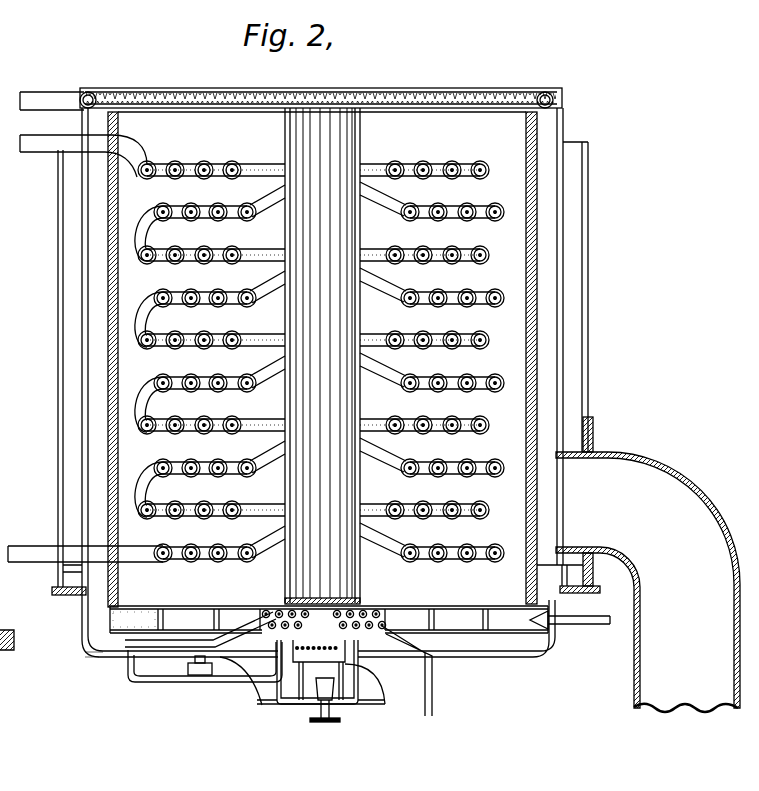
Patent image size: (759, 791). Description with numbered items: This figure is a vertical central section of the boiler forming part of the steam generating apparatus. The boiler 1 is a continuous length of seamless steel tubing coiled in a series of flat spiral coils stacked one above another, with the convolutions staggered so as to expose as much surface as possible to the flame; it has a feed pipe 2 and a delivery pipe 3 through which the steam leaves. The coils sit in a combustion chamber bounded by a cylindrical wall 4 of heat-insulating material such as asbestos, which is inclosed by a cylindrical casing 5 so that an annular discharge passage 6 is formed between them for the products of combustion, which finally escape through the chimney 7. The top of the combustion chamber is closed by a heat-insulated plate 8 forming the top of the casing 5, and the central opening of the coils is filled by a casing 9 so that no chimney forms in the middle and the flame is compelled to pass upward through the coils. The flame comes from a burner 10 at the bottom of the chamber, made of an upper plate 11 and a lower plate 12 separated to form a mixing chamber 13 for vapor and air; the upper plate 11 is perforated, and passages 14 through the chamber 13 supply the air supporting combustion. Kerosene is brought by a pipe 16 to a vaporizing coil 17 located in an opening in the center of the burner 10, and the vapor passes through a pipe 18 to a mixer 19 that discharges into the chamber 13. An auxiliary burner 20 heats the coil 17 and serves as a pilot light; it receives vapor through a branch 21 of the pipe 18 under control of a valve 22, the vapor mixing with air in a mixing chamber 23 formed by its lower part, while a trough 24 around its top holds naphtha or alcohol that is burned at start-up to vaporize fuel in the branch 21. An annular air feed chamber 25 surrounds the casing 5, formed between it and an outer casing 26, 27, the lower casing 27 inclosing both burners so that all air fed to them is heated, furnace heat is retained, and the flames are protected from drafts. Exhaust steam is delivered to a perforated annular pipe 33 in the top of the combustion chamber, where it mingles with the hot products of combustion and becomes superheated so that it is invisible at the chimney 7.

The boiler 1 is at (492, 222).
The feed pipe 2 is at (28, 545).
The delivery pipe 3 is at (33, 150).
The cylindrical wall 4 is at (133, 301).
The cylindrical casing 5 is at (86, 249).
The annular discharge passage 6 is at (321, 359).
The chimney 7 is at (648, 582).
The heat insulated plate 8 is at (250, 88).
The casing 9 is at (322, 356).
The burner 10 is at (228, 606).
The upper plate 11 is at (144, 609).
The lower plate 12 is at (196, 634).
The mixing chamber 13 is at (134, 622).
The passages 14 is at (173, 609).
The pipe 16 is at (433, 690).
The vaporizing coil 17 is at (372, 610).
The pipe 18 is at (151, 683).
The mixer 19 is at (563, 616).
The auxiliary burner 20 is at (310, 690).
The branch 21 is at (397, 693).
The valve 22 is at (338, 718).
The mixing chamber 23 is at (268, 688).
The trough 24 is at (270, 680).
The annular air feed chamber 25 is at (58, 318).
The outer casing 26 is at (58, 414).
The lower casing 27 is at (85, 641).
The annular pipe 33 is at (92, 92).